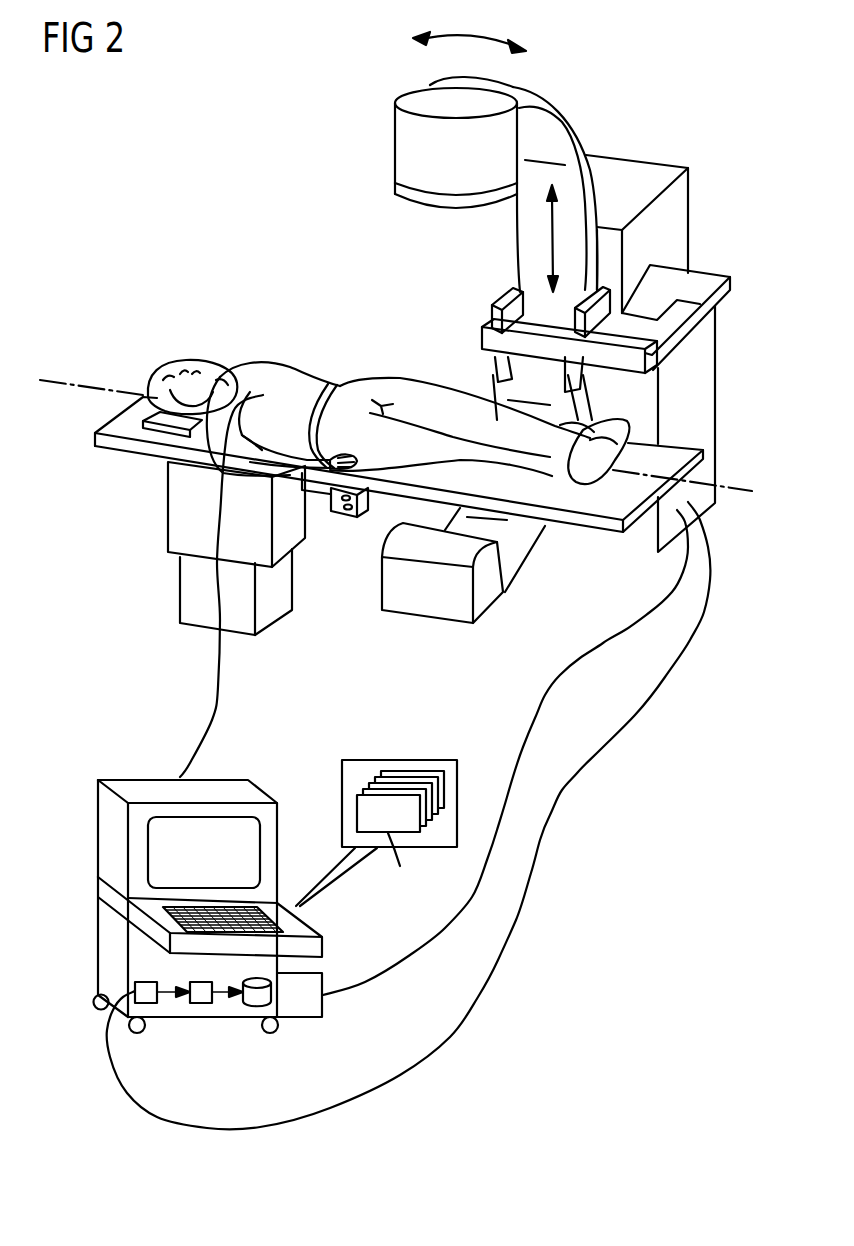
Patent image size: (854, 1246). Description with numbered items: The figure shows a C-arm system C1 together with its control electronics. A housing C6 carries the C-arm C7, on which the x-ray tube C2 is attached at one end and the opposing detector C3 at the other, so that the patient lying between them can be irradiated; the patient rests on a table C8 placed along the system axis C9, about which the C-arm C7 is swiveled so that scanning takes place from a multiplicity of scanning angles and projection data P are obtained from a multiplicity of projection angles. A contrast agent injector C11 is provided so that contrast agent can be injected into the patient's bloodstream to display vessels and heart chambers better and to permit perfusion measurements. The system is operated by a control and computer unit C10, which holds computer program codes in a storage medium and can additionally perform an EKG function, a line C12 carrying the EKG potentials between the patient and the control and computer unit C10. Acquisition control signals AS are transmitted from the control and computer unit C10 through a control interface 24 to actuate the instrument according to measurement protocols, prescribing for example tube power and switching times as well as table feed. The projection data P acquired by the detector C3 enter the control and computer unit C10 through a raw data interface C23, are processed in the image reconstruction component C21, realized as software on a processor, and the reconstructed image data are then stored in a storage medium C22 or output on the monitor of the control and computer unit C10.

The C-arm system C1 is at (204, 249).
The x-ray tube C2 is at (404, 148).
The detector C3 is at (490, 597).
The housing C6 is at (678, 198).
The C-arm C7 is at (567, 123).
The patient table C8 is at (115, 446).
The system axis C9 is at (86, 382).
The control and computer unit C10 is at (107, 933).
The contrast agent injector C11 is at (337, 504).
The line C12 is at (218, 690).
The image reconstruction component C21 is at (199, 1005).
The storage medium C22 is at (254, 1007).
The raw data interface C23 is at (148, 1005).
The control interface 24 is at (300, 1010).
The acquisition control signals AS is at (538, 707).
The projection measurement data P is at (563, 779).